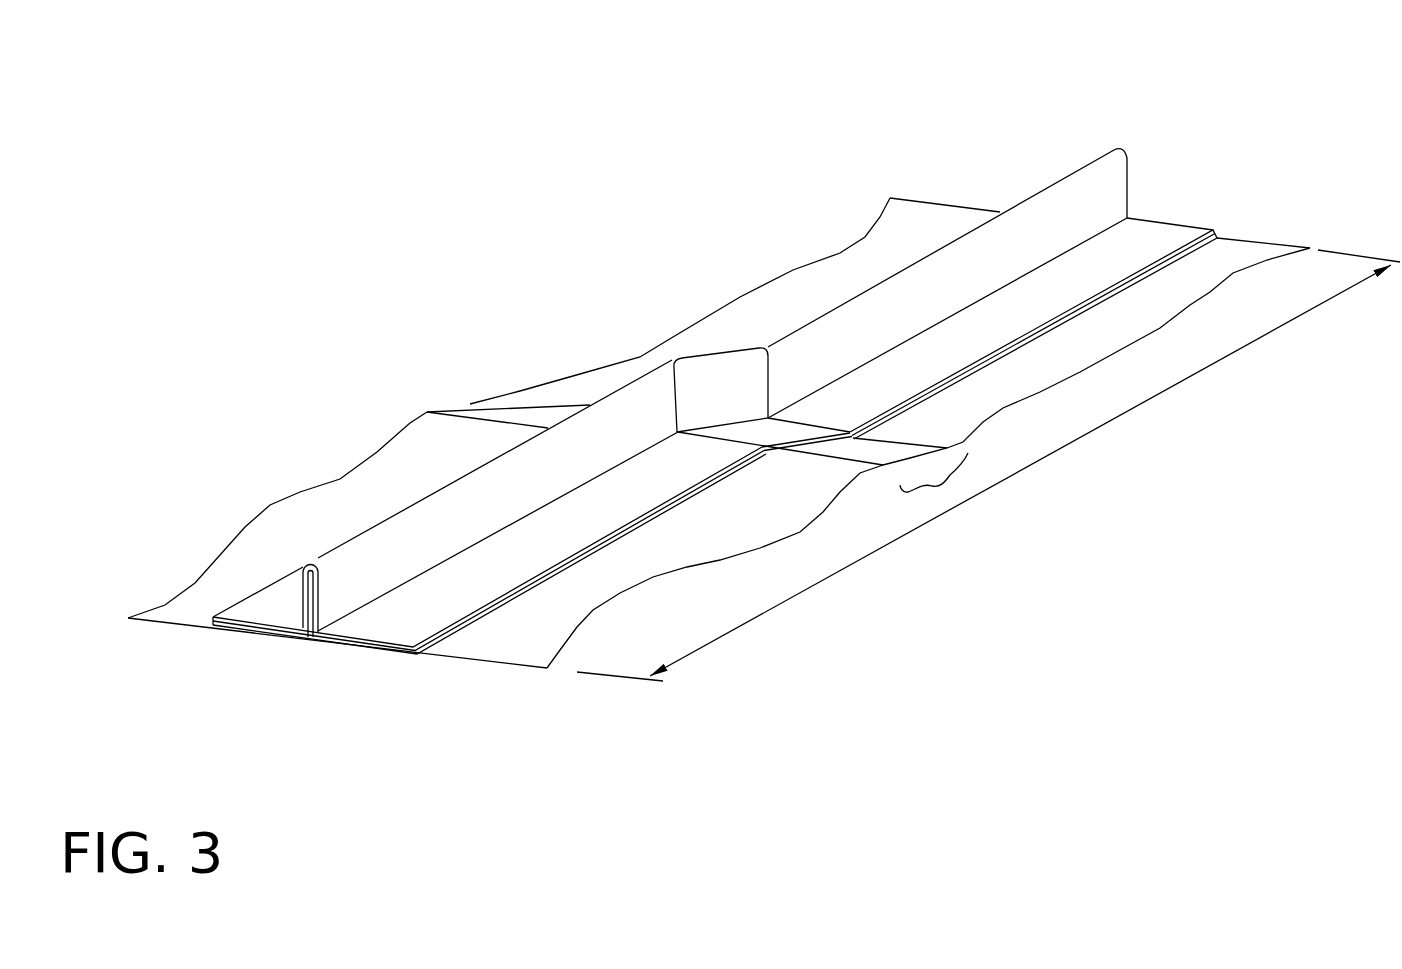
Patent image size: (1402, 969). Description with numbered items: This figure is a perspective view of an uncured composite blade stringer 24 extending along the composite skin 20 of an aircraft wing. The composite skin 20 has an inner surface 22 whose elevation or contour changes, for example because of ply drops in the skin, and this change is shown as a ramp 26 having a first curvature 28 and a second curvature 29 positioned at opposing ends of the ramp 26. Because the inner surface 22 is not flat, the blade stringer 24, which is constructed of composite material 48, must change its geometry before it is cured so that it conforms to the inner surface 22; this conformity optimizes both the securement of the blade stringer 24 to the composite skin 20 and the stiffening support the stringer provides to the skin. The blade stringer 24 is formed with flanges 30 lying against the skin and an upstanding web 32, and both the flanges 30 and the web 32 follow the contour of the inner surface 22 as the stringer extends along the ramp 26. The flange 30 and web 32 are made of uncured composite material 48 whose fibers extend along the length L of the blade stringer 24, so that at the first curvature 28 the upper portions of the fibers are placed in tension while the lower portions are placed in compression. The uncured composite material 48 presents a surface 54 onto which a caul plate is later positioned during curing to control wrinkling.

The composite skin 20 is at (888, 238).
The inner surface 22 is at (1223, 253).
The blade stringer 24 is at (1090, 138).
The ramp 26 is at (943, 492).
The first curvature 28 is at (478, 417).
The second curvature 29 is at (557, 405).
The flange 30 is at (1181, 226).
The web 32 is at (1035, 243).
The composite material 48 is at (1107, 188).
The surface 54 is at (977, 252).
The length L is at (1060, 452).